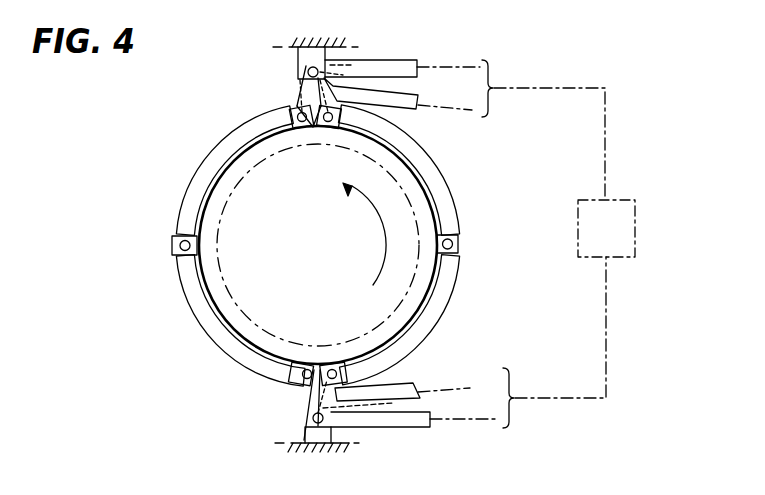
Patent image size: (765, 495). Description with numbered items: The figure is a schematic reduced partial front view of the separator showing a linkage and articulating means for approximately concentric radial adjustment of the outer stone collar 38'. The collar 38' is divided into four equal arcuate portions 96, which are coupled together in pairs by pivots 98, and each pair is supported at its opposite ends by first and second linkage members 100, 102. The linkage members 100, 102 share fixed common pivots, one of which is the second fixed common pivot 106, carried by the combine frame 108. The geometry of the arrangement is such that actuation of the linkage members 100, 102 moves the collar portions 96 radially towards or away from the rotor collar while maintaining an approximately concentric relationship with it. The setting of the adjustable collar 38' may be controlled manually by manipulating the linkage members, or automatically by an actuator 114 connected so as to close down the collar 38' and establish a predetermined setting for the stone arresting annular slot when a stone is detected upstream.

The outer stone collar 38' is at (110, 228).
The arcuate portions 96 is at (206, 158).
The pivots 98 is at (176, 247).
The first linkage member 100 is at (393, 59).
The second linkage member 102 is at (416, 115).
The second fixed common pivot 106 is at (312, 418).
The combine frame 108 is at (308, 38).
The actuator 114 is at (624, 199).